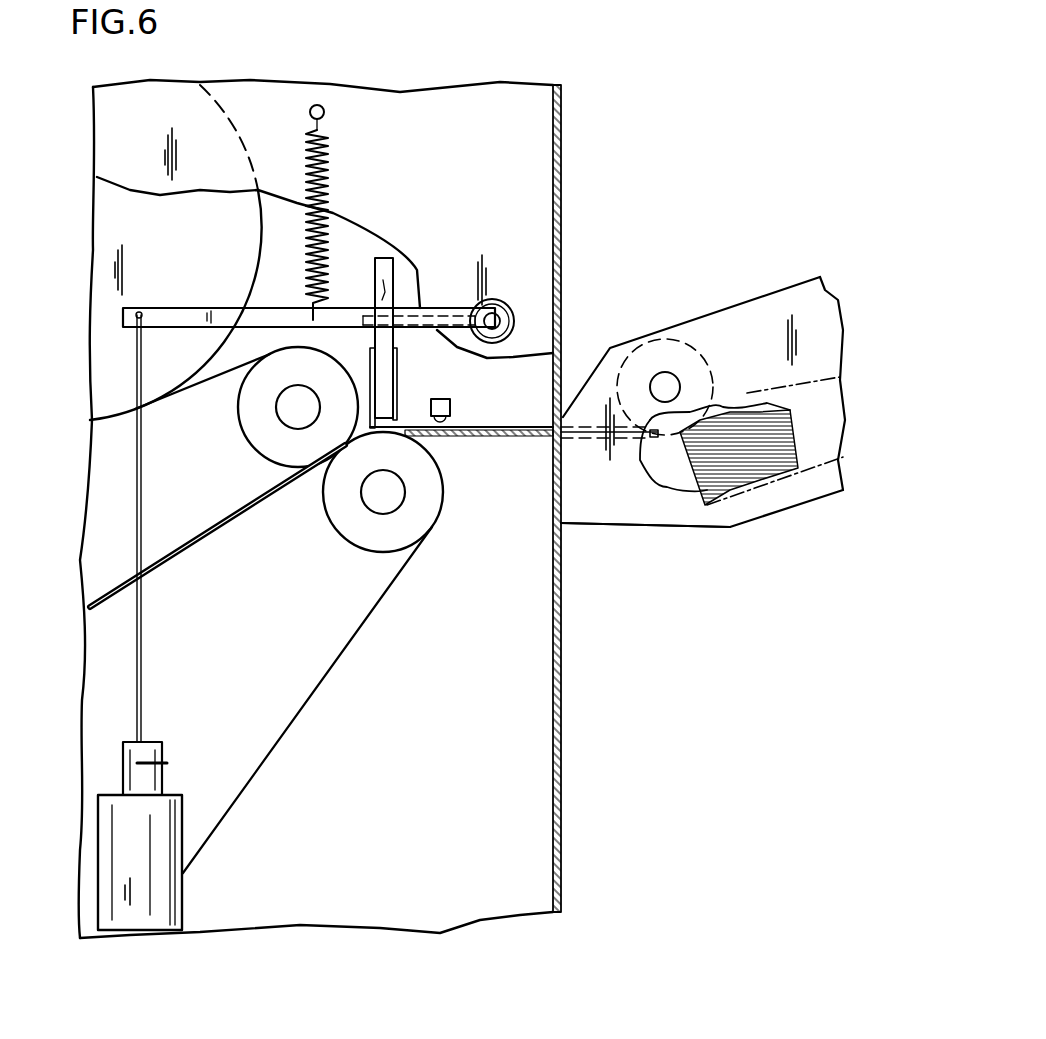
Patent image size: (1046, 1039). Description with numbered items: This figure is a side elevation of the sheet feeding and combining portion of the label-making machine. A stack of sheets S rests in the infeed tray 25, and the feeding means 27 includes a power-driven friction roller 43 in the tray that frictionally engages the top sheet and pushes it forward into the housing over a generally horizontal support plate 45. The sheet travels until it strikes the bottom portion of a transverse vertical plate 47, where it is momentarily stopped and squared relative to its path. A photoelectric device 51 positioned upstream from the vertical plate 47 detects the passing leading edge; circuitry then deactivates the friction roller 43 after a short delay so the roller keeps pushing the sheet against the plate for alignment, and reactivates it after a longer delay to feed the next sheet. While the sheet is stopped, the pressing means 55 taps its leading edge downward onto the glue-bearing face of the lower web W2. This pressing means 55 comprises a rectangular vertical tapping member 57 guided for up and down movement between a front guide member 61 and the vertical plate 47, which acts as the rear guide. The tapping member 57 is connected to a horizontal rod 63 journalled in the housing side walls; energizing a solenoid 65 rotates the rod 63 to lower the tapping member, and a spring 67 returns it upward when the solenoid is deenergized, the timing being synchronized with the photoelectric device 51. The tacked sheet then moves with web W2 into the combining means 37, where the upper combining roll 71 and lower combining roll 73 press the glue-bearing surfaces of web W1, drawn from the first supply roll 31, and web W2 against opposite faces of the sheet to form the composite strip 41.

The infeed tray 25 is at (641, 528).
The feeding means 27 is at (723, 333).
The first supply roll 31 is at (232, 118).
The combining means 37 is at (437, 542).
The composite strip 41 is at (197, 547).
The friction roller 43 is at (618, 374).
The support plate 45 is at (470, 437).
The vertical plate 47 is at (370, 352).
The photoelectric device 51 is at (443, 399).
The pressing means 55 is at (424, 264).
The tapping member 57 is at (383, 258).
The front guide member 61 is at (400, 387).
The horizontal rod 63 is at (496, 300).
The solenoid 65 is at (158, 742).
The spring 67 is at (330, 168).
The upper combining roll 71 is at (247, 440).
The lower combining roll 73 is at (353, 543).
The web material W1 is at (197, 383).
The web material W2 is at (280, 745).
The sheets S is at (503, 387).